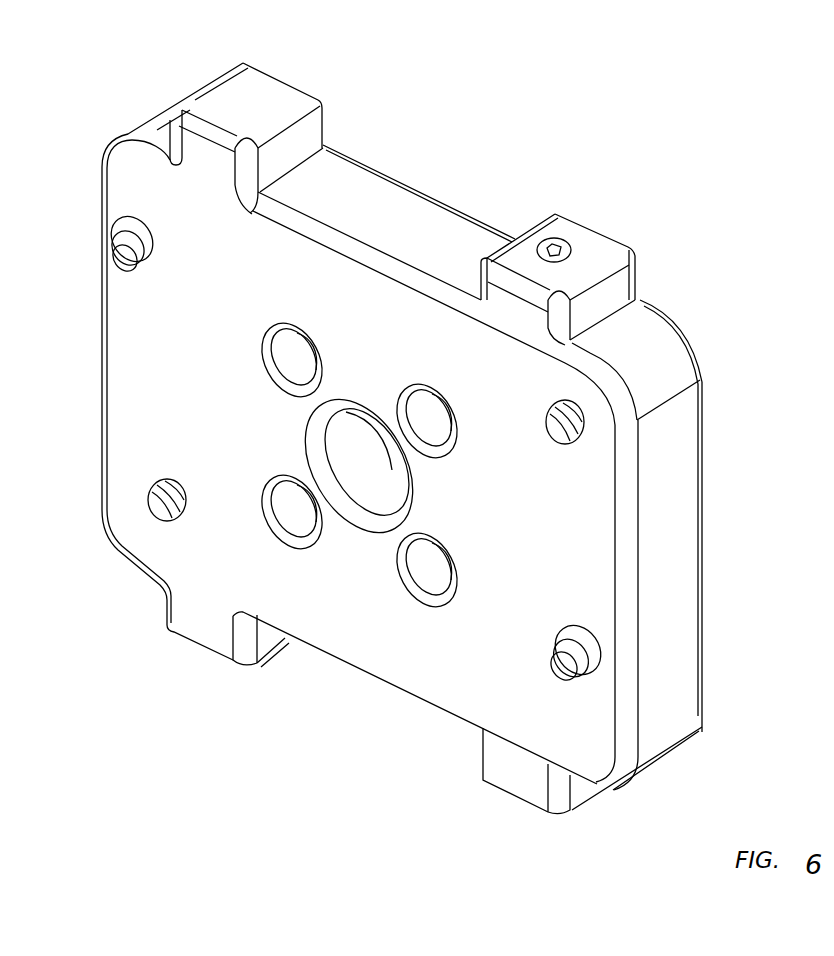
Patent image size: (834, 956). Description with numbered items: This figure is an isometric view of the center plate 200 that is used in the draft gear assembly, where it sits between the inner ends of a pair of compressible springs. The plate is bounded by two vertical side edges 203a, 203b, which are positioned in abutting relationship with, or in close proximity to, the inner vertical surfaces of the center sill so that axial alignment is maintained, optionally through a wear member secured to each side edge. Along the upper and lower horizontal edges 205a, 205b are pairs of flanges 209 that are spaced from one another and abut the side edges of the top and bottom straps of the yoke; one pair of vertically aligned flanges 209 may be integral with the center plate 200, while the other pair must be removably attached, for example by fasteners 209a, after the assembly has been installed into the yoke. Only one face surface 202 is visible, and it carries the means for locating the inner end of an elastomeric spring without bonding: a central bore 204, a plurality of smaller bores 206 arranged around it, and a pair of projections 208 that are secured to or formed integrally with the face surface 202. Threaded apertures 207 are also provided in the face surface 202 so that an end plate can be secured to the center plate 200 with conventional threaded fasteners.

The center plate 200 is at (490, 222).
The face surface 202 is at (143, 457).
The vertical side edge 203a is at (680, 507).
The vertical side edge 203b is at (100, 298).
The central bore 204 is at (367, 527).
The horizontal edge 205a is at (396, 208).
The horizontal edge 205b is at (370, 680).
The bores 206 is at (268, 480).
The threaded apertures 207 is at (168, 516).
The projections 208 is at (137, 270).
The flanges 209 is at (282, 93).
The fasteners 209a is at (556, 249).